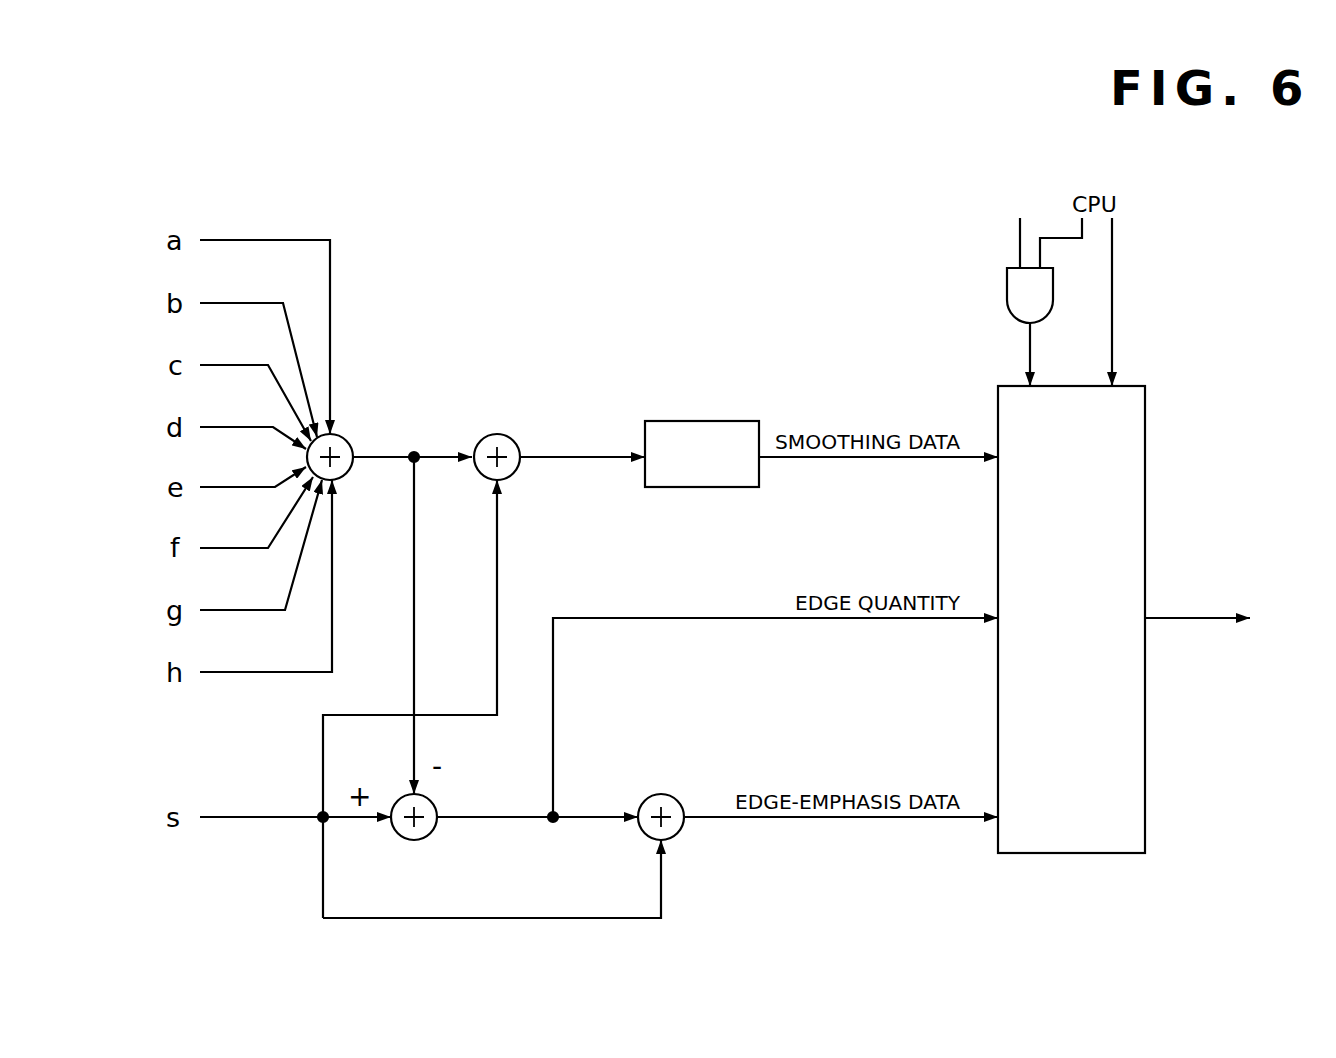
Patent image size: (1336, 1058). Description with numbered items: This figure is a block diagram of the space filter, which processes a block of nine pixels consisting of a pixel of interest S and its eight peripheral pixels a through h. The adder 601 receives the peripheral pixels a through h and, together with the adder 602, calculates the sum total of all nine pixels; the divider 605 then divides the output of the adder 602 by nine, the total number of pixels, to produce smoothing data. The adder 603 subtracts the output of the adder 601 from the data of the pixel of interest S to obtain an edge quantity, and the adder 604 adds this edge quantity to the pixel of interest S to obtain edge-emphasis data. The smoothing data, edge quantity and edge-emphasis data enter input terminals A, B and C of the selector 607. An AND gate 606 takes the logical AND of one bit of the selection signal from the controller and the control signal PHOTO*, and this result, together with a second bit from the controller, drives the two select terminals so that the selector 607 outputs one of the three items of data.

The adder 601 is at (345, 437).
The adder 602 is at (505, 435).
The adder 603 is at (430, 836).
The adder 604 is at (670, 797).
The divider 605 is at (737, 421).
The AND gate 606 is at (1007, 294).
The selector 607 is at (1145, 417).